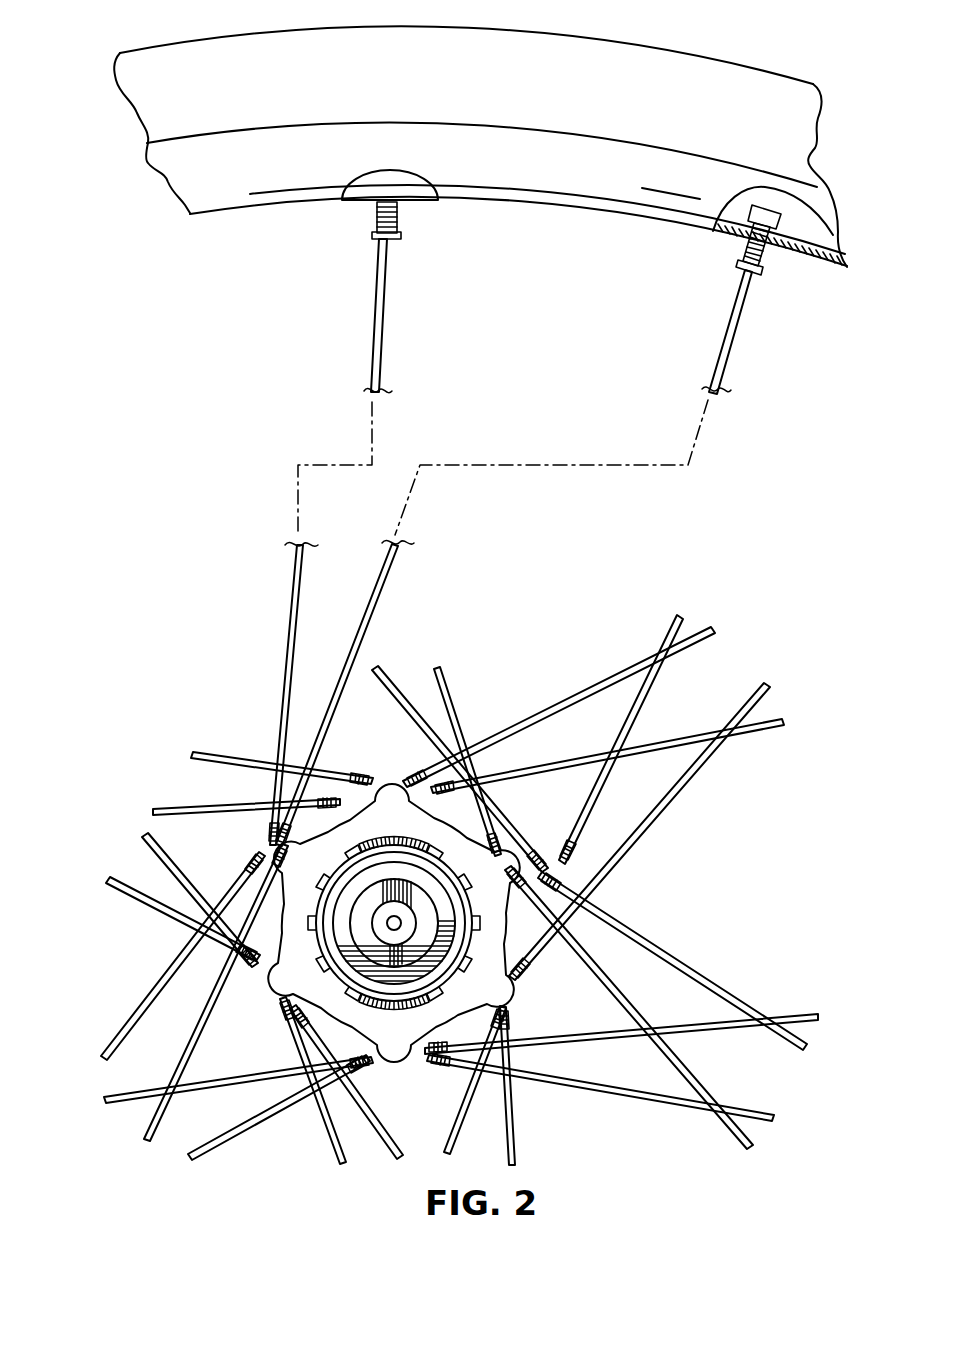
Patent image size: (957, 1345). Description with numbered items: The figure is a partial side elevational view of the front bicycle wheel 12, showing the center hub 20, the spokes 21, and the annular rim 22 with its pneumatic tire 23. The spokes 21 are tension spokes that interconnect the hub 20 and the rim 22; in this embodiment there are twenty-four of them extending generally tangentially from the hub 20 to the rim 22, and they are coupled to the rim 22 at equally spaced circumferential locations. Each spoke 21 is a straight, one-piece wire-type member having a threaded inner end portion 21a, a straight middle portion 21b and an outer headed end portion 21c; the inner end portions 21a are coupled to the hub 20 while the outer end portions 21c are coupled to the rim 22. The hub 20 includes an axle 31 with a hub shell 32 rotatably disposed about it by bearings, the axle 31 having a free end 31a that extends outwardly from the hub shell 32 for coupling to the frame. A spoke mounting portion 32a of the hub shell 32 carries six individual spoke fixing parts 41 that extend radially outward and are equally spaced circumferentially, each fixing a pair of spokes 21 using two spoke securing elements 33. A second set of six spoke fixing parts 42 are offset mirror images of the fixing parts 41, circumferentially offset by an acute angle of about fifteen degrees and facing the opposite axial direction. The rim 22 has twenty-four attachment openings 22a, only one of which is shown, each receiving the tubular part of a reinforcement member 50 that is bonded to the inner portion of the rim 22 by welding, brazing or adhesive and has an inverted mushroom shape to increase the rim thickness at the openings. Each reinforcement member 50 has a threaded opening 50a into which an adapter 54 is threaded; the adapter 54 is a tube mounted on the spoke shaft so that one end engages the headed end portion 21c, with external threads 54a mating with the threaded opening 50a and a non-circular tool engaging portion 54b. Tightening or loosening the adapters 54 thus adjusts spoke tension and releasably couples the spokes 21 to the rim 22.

The front bicycle wheel 12 is at (718, 552).
The center hub 20 is at (623, 892).
The spokes 21 is at (460, 686).
The threaded inner end portion 21a is at (272, 818).
The middle portion 21b is at (287, 582).
The outer headed end portion 21c is at (377, 252).
The annular rim 22 is at (562, 215).
The attachment openings 22a is at (781, 236).
The pneumatic tire 23 is at (682, 52).
The axle 31 is at (367, 908).
The free end of axle 31a is at (380, 926).
The hub shell 32 is at (515, 906).
The spoke mounting portion 32a is at (523, 947).
The spoke securing elements 33 is at (402, 780).
The spoke fixing parts 41 is at (383, 777).
The spoke fixing parts 42 is at (255, 857).
The reinforcement members 50 is at (348, 209).
The threaded opening 50a is at (772, 212).
The adapter 54 is at (365, 237).
The external threads 54a is at (397, 218).
The tool engaging portion 54b is at (398, 236).